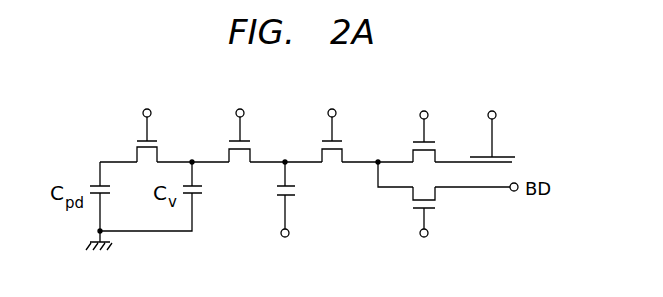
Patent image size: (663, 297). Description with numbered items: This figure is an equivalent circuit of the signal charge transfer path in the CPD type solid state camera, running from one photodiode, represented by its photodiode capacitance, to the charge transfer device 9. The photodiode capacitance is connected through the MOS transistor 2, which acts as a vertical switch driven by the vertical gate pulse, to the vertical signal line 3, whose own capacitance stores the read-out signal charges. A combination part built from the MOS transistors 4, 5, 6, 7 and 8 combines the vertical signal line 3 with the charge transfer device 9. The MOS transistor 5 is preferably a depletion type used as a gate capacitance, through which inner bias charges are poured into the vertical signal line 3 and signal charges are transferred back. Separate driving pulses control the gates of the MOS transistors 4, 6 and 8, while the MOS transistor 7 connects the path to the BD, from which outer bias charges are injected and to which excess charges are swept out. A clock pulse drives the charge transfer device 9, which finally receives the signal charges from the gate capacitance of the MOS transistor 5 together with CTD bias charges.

The MOS transistor 2 is at (145, 158).
The vertical signal line 3 is at (185, 160).
The MOS transistor 4 is at (238, 162).
The MOS transistor 5 is at (290, 198).
The MOS transistor 6 is at (331, 163).
The MOS transistor 7 is at (407, 197).
The MOS transistor 8 is at (403, 157).
The charge transfer device 9 is at (500, 145).